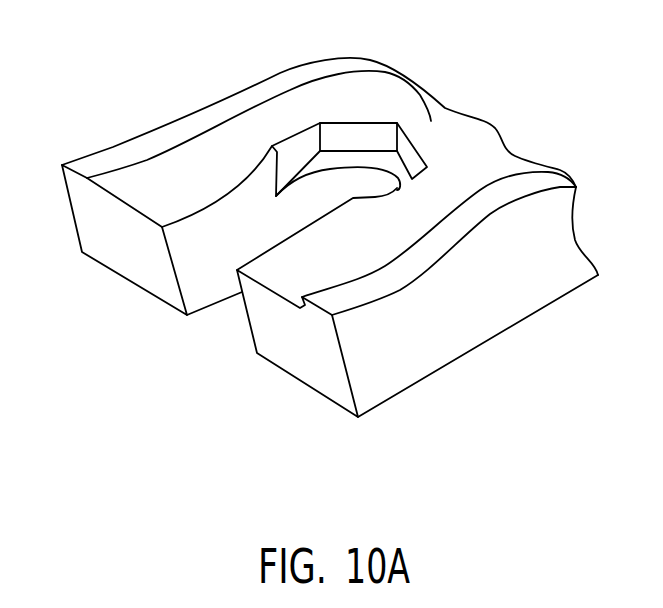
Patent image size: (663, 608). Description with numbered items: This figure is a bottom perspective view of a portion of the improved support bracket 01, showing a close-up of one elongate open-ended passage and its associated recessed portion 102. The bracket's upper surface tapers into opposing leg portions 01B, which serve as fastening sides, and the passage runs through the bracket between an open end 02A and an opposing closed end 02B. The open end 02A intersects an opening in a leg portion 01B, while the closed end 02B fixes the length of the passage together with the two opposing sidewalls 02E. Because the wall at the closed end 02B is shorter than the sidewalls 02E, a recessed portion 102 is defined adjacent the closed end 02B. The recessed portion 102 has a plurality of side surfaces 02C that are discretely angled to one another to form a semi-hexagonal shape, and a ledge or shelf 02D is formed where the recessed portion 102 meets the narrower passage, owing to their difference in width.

The support bracket 01 is at (230, 150).
The leg portion 01B is at (88, 232).
The open end 02A is at (237, 315).
The closed end 02B is at (377, 183).
The side surfaces 02C is at (352, 135).
The ledge or shelf 02D is at (388, 186).
The sidewalls 02E is at (203, 237).
The recessed portion 102 is at (396, 179).